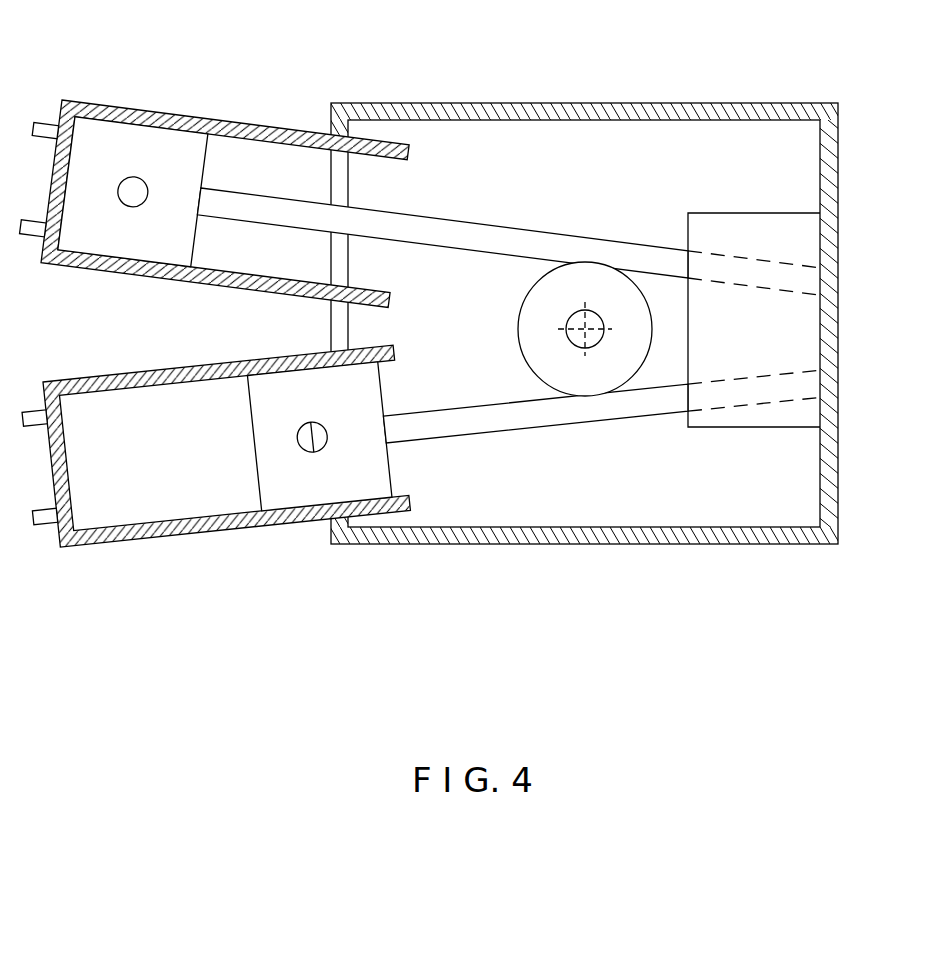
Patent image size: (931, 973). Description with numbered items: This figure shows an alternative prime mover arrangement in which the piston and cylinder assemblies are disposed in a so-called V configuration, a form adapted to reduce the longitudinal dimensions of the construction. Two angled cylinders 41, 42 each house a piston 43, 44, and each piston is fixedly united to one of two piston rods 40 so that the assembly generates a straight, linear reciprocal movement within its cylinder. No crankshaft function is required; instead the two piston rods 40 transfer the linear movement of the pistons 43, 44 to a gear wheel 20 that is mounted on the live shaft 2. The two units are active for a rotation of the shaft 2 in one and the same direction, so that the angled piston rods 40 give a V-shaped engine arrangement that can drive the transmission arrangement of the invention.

The first shaft 2 is at (595, 337).
The gear wheel 20 is at (628, 283).
The piston rods 40 is at (485, 223).
The cylinder 41 is at (272, 125).
The cylinder 42 is at (192, 538).
The piston 43 is at (158, 150).
The piston 44 is at (287, 495).